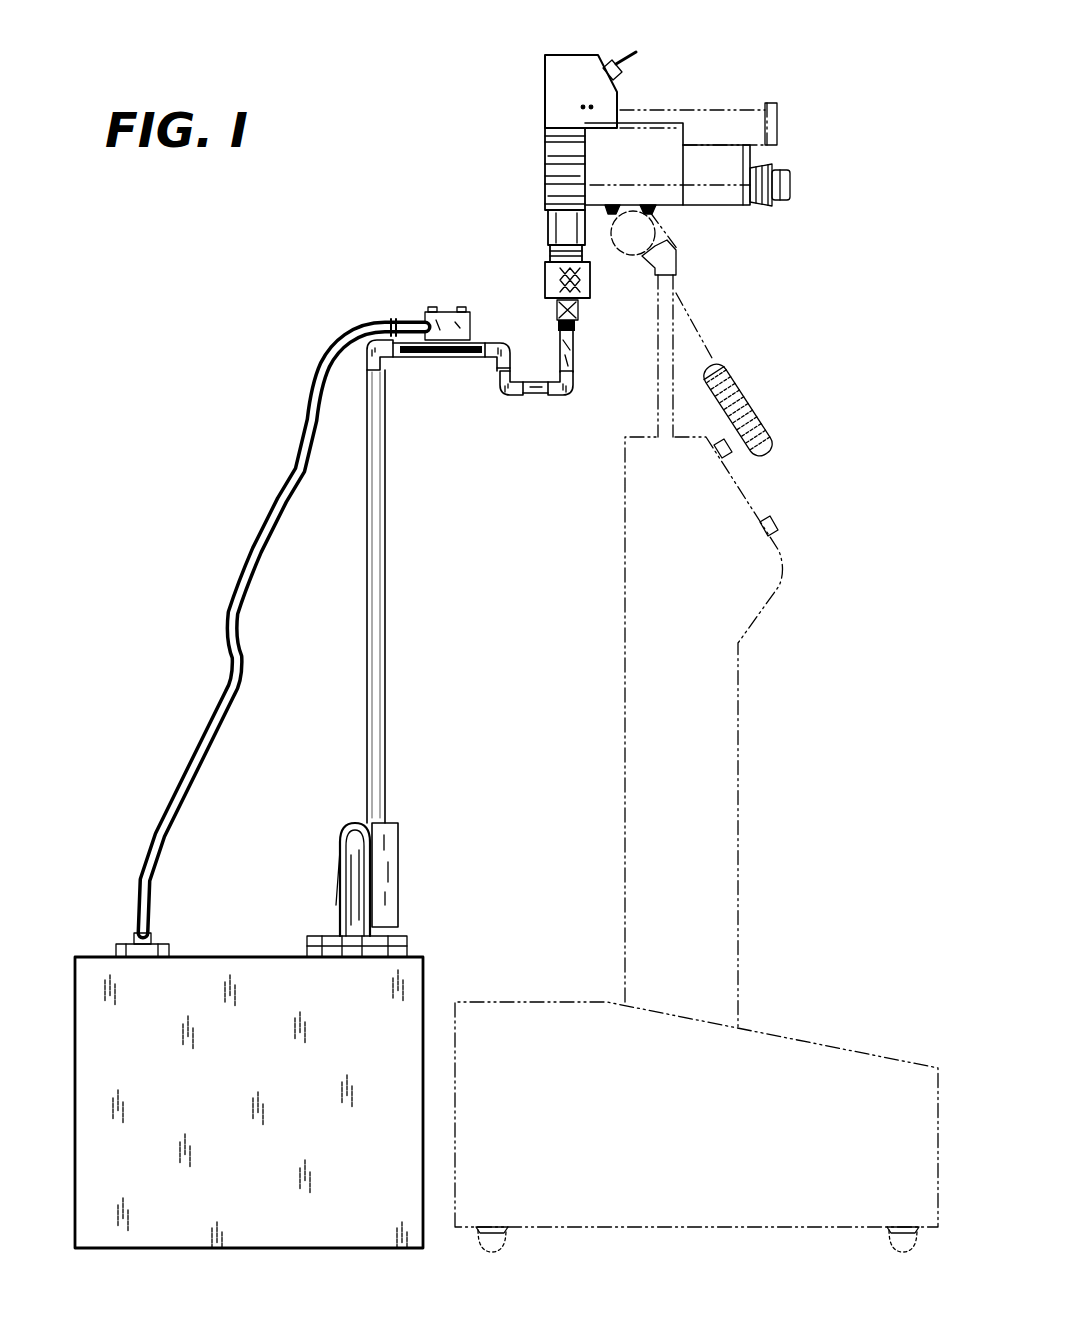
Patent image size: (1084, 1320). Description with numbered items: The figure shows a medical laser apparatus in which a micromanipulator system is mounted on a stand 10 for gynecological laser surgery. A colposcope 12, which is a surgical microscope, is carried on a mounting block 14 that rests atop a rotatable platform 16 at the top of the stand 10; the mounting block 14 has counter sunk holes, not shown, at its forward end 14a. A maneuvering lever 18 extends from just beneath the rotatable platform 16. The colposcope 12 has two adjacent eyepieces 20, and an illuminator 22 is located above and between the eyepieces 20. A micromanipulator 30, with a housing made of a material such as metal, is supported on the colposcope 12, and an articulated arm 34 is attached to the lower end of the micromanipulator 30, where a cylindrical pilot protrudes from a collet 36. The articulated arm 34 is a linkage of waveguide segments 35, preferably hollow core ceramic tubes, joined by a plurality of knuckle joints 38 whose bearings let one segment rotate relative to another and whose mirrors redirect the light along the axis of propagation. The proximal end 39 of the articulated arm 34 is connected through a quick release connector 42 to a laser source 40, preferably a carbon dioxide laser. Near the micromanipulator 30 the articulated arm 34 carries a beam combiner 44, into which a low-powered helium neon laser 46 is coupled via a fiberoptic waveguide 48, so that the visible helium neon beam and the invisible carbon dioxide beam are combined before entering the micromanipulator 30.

The stand 10 is at (740, 755).
The colposcope 12 is at (710, 92).
The mounting block 14 is at (688, 207).
The forward end 14a is at (545, 200).
The rotatable platform 16 is at (652, 207).
The maneuvering lever 18 is at (722, 372).
The eyepieces 20 is at (792, 182).
The illuminator 22 is at (777, 120).
The micromanipulator 30 is at (497, 120).
The articulated arm 34 is at (424, 645).
The waveguide segments 35 is at (480, 340).
The collet 36 is at (580, 308).
The knuckle joints 38 is at (383, 372).
The proximal end 39 is at (417, 898).
The laser source 40 is at (425, 988).
The quick release connector 42 is at (410, 936).
The beam combiner 44 is at (444, 307).
The helium neon laser 46 is at (200, 955).
The fiberoptic waveguide 48 is at (256, 545).